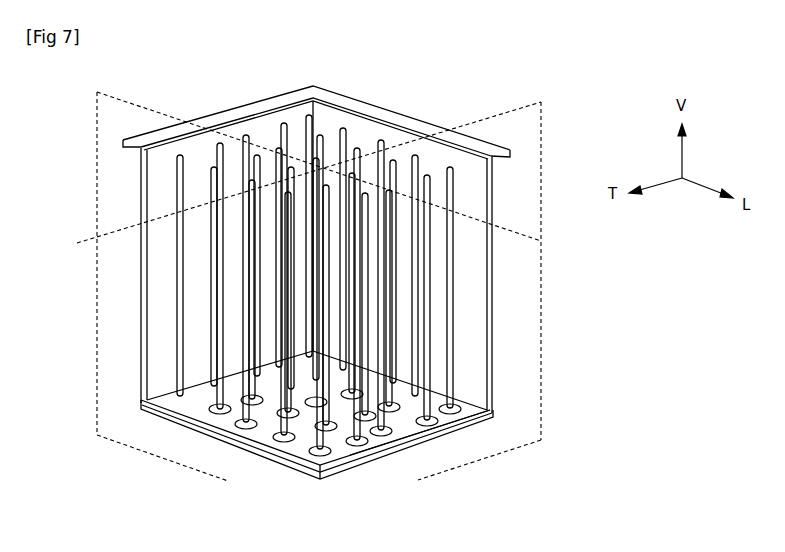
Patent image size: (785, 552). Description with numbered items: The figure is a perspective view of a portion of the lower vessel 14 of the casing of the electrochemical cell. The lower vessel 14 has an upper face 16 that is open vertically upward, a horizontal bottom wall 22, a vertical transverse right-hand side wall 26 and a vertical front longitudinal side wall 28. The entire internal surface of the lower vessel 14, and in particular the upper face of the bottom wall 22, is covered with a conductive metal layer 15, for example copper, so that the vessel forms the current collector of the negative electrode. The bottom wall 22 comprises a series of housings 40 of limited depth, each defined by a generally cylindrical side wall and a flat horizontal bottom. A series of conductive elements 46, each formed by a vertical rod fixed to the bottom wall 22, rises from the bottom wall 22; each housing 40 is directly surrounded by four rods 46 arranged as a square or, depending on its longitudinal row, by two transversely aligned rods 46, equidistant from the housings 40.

The lower vessel 14 is at (283, 468).
The conductive metal layer 15 is at (250, 403).
The upper face 16 is at (404, 117).
The horizontal bottom wall 22 is at (390, 463).
The right-hand side wall 26 is at (139, 311).
The front longitudinal side wall 28 is at (492, 300).
The housings 40 is at (268, 380).
The conductive elements 46 is at (185, 355).